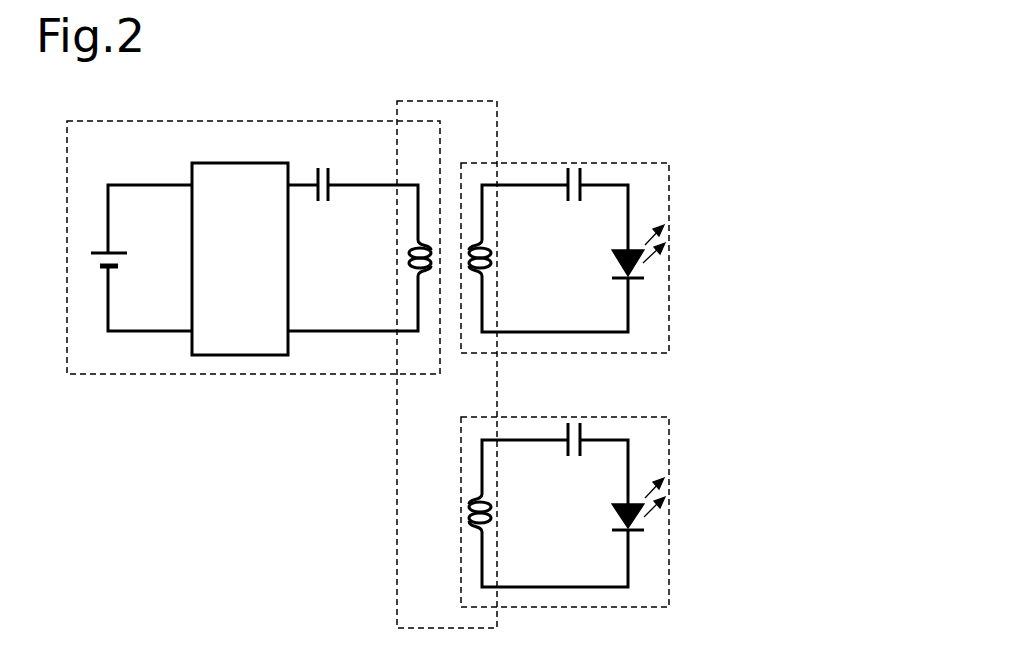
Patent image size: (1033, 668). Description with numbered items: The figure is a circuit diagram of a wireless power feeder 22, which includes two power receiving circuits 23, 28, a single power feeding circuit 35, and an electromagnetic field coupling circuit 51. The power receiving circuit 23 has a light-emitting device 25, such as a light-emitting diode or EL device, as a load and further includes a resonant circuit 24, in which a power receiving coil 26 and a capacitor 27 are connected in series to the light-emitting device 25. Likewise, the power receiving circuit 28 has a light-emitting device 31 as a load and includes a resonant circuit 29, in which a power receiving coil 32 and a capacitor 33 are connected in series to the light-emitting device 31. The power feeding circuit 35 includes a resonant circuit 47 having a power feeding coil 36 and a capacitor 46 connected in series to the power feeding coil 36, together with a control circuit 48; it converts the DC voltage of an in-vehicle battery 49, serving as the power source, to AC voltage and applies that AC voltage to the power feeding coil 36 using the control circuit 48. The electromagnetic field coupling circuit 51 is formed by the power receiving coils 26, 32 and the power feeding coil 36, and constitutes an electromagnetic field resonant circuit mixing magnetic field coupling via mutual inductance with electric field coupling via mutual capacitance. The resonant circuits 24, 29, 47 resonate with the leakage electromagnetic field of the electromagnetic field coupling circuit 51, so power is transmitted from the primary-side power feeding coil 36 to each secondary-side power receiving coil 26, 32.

The wireless power feeder 22 is at (737, 136).
The power receiving circuit 23 is at (648, 162).
The resonant circuit 24 is at (513, 280).
The light-emitting device 25 is at (612, 252).
The power receiving coil 26 is at (490, 250).
The capacitor 27 is at (567, 170).
The power receiving circuit 28 is at (648, 417).
The resonant circuit 29 is at (513, 533).
The light-emitting device 31 is at (612, 508).
The power receiving coil 32 is at (490, 505).
The capacitor 33 is at (567, 426).
The power feeding circuit 35 is at (160, 121).
The power feeding coil 36 is at (410, 248).
The capacitor 46 is at (317, 183).
The resonant circuit 47 is at (390, 280).
The control circuit 48 is at (213, 356).
The in-vehicle battery 49 is at (118, 252).
The electromagnetic field coupling circuit 51 is at (396, 548).